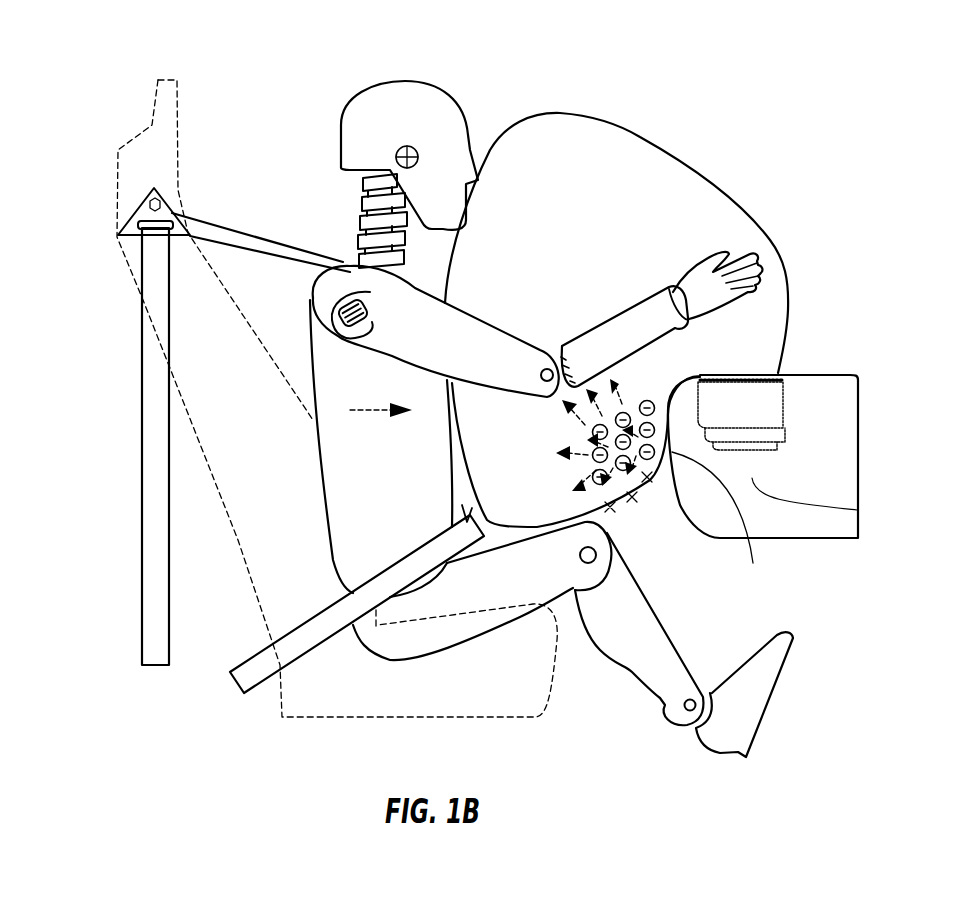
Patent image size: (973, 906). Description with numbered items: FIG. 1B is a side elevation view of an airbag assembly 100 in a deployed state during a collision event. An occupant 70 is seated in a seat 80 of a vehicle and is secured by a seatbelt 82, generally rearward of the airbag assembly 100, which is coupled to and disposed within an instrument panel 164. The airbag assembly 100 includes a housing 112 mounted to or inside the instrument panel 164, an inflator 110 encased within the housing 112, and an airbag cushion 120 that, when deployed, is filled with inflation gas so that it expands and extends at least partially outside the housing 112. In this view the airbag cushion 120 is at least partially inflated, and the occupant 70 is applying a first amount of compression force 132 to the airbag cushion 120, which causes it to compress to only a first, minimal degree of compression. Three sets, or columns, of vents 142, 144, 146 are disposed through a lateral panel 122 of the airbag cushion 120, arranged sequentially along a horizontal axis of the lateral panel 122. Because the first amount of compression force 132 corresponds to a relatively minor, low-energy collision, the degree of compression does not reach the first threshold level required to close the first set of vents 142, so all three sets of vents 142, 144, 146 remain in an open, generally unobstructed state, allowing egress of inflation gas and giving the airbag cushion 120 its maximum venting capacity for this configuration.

The occupant 70 is at (399, 457).
The seat 80 is at (275, 471).
The seatbelt 82 is at (243, 240).
The airbag assembly 100 is at (908, 166).
The inflator 110 is at (857, 510).
The housing 112 is at (795, 396).
The airbag cushion 120 is at (730, 193).
The lateral panel 122 is at (532, 484).
The first amount of compression force 132 is at (368, 405).
The first set of vents 142 is at (647, 477).
The second set of vents 144 is at (632, 497).
The third set of vents 146 is at (612, 507).
The instrument panel 164 is at (721, 522).